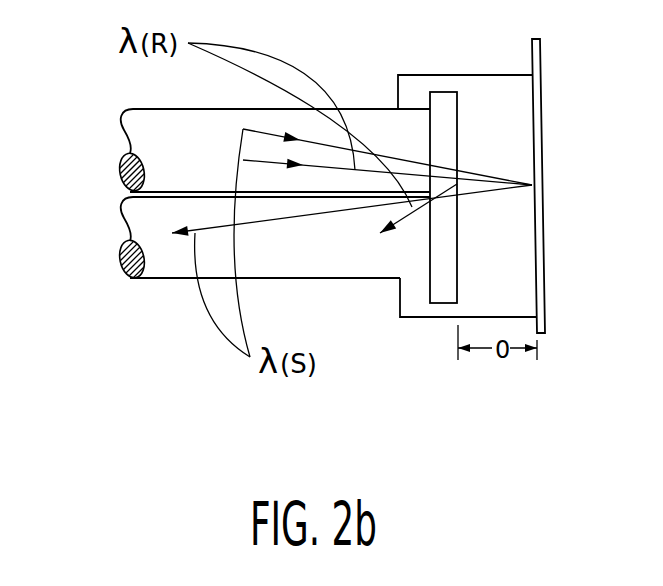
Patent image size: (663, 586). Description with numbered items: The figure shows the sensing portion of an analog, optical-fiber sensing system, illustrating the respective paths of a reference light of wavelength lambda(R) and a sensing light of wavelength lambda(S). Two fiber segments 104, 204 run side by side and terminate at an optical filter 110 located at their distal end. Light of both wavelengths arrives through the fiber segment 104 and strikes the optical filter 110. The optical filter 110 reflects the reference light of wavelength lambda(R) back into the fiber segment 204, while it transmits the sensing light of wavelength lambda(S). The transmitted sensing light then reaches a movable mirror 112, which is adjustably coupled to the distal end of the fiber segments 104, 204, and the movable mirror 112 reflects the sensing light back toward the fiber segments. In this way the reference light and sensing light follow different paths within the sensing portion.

The fiber segment 104 is at (180, 138).
The fiber segment 204 is at (130, 250).
The optical filter 110 is at (465, 242).
The movable mirror 112 is at (540, 108).